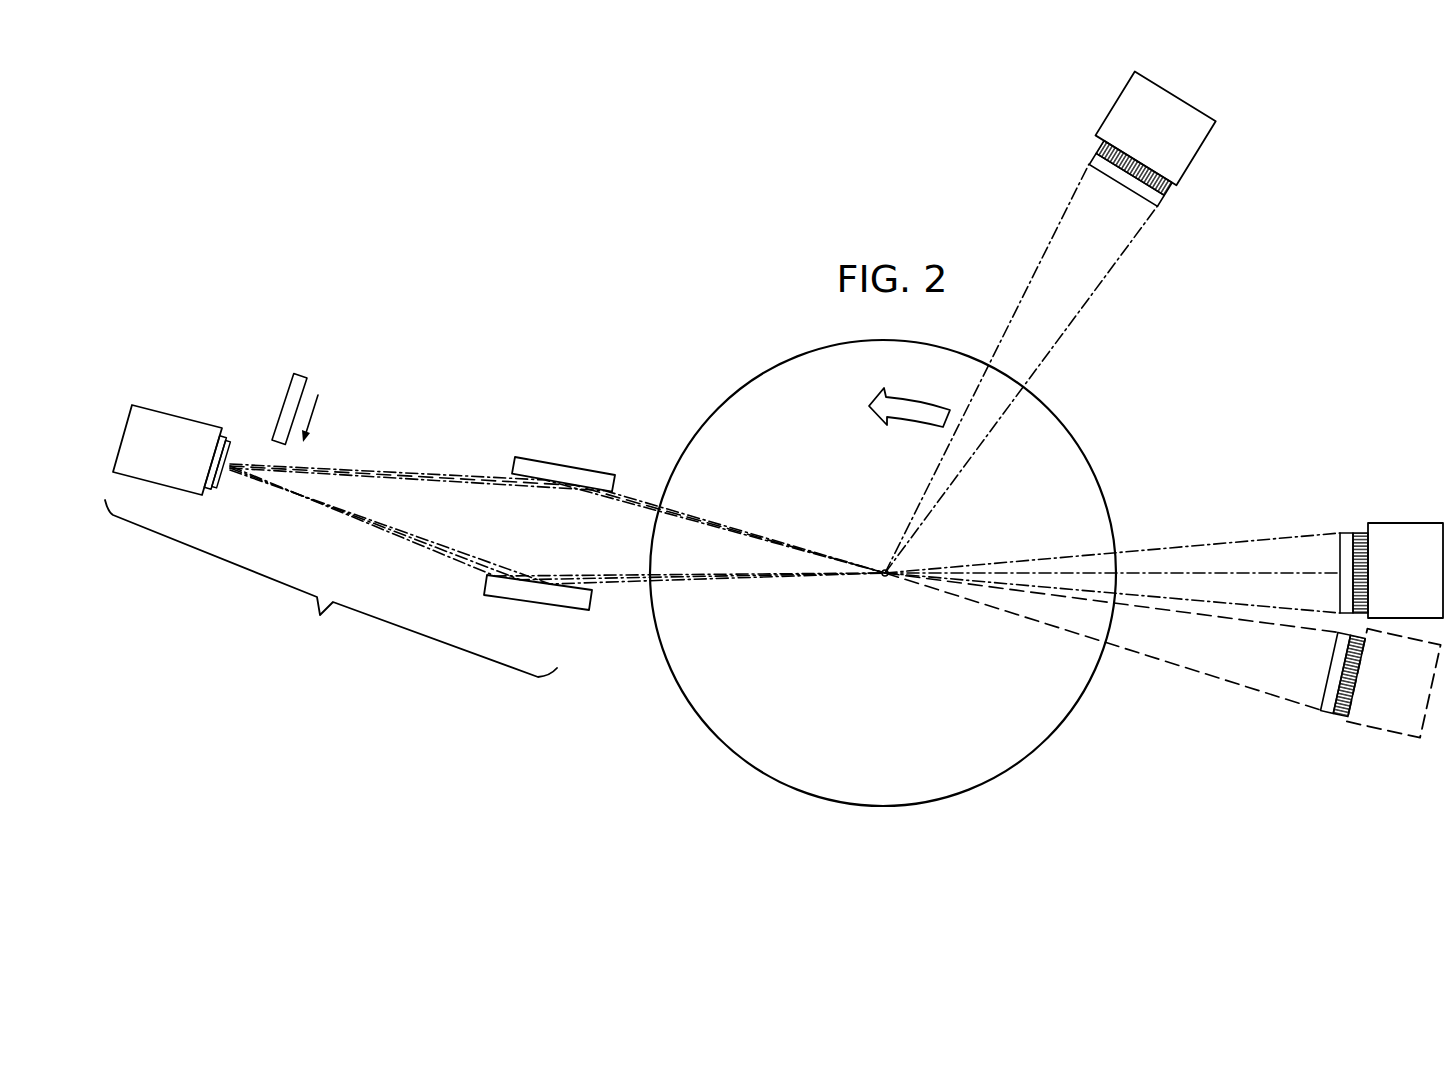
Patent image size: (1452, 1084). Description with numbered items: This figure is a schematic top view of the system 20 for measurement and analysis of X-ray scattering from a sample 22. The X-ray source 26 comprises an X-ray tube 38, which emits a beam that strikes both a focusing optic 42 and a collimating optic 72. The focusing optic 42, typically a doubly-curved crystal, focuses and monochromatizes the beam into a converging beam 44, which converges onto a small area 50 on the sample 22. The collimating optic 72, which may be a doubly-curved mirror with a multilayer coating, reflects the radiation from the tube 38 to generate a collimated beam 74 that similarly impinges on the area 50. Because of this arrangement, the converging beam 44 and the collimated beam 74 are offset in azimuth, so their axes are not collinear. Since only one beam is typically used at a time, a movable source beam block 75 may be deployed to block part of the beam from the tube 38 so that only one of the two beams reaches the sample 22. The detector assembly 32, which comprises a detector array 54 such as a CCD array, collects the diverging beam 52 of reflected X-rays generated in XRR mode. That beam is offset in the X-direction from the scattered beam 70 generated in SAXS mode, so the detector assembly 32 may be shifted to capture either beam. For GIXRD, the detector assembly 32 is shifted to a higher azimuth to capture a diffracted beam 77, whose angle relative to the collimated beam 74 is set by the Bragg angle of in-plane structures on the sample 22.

The system 20 is at (368, 286).
The sample 22 is at (1057, 410).
The X-ray source 26 is at (331, 588).
The detector assembly 32 is at (1415, 530).
The X-ray tube 38 is at (163, 431).
The focusing optic 42 is at (533, 593).
The converging beam 44 is at (617, 587).
The area 50 is at (885, 578).
The diverging beam 52 is at (1192, 548).
The detector array 54 is at (1360, 532).
The scattered beam 70 is at (1197, 668).
The collimating optic 72 is at (538, 464).
The collimated beam 74 is at (637, 502).
The movable source beam block 75 is at (292, 393).
The diffracted beam 77 is at (1110, 260).